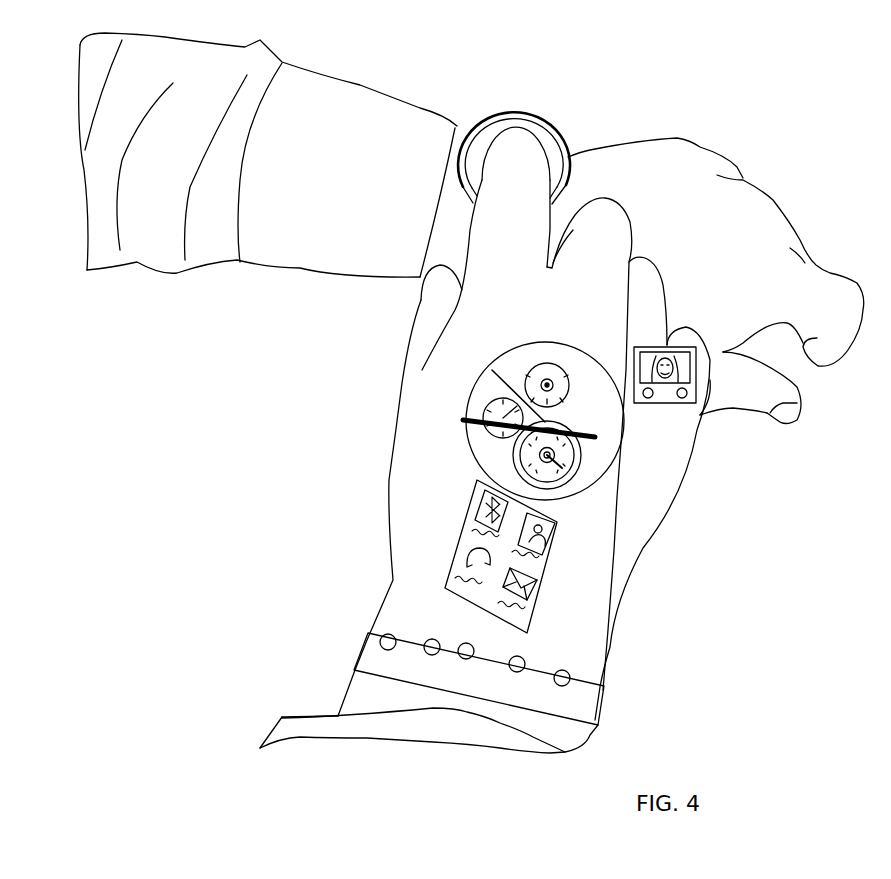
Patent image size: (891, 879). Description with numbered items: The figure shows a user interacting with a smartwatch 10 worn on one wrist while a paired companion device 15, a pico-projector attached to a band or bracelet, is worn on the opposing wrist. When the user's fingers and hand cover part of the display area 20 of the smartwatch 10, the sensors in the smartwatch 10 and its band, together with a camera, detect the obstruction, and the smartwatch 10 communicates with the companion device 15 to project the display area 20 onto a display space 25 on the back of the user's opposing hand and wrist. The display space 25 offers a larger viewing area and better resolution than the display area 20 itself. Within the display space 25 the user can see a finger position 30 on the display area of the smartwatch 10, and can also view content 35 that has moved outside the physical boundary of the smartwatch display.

The smartwatch 10 is at (551, 143).
The display area 20 is at (492, 111).
The companion device 15 is at (377, 658).
The display space 25 is at (600, 467).
The finger position 30 is at (467, 445).
The content 35 is at (678, 350).